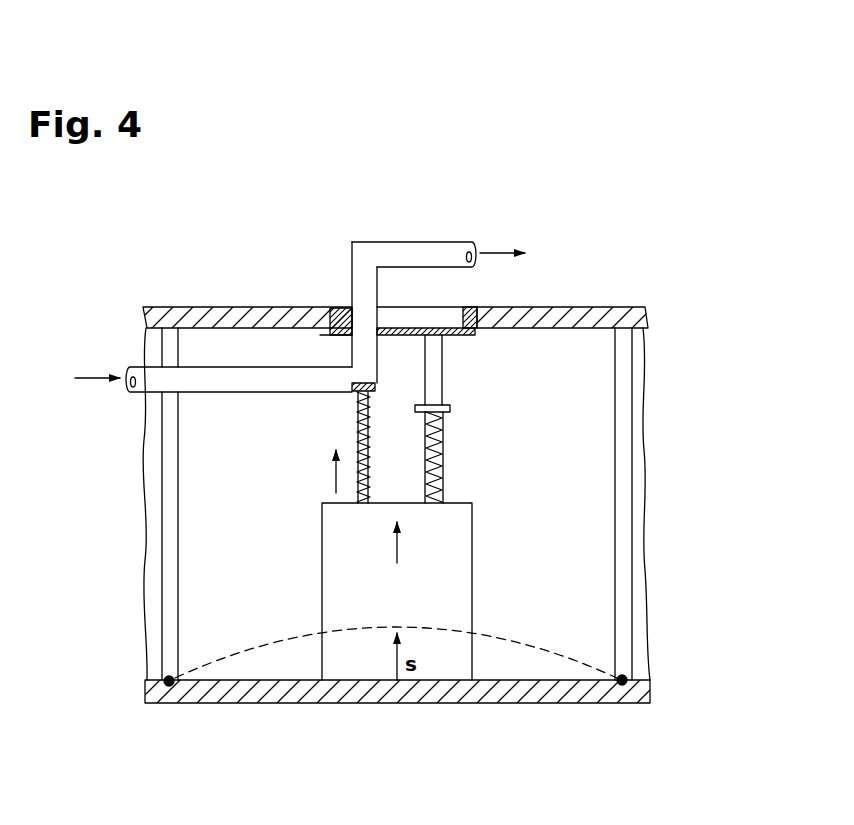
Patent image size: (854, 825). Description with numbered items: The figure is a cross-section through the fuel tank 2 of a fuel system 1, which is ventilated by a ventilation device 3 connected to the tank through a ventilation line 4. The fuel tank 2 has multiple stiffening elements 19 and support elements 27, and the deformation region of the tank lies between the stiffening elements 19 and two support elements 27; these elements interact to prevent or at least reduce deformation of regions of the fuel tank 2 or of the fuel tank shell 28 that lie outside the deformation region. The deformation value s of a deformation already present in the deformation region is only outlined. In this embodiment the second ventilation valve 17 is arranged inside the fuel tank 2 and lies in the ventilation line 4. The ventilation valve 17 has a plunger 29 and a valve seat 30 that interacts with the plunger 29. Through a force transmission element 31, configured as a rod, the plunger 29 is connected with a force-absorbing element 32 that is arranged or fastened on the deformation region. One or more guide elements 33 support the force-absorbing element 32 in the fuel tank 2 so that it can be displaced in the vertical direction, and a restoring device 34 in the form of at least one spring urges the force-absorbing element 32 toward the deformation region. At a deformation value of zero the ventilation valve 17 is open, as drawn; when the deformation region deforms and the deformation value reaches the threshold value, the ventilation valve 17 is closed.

The fuel system 1 is at (538, 207).
The fuel tank 2 is at (591, 271).
The ventilation device 3 is at (334, 221).
The ventilation line 4 is at (418, 250).
The second ventilation valve 17 is at (334, 356).
The stiffening element 19 is at (170, 686).
The support element 27 is at (172, 440).
The fuel tank shell 28 is at (211, 318).
The plunger 29 is at (372, 387).
The valve seat 30 is at (336, 334).
The force transmission element 31 is at (356, 432).
The force-absorbing element 32 is at (455, 530).
The guide element 33 is at (447, 383).
The restoring device 34 is at (447, 430).